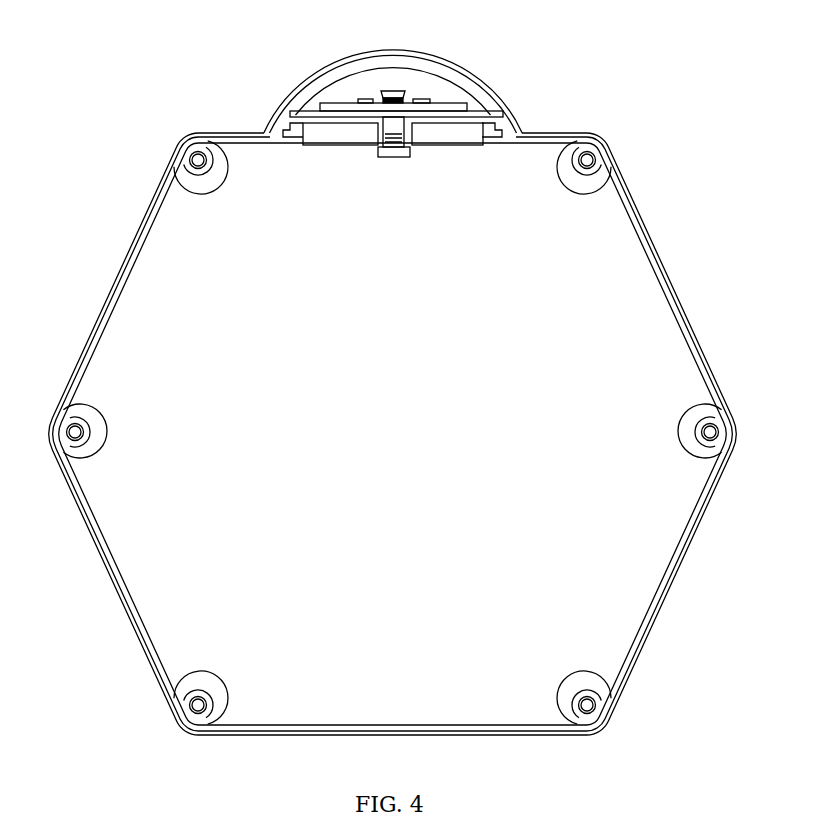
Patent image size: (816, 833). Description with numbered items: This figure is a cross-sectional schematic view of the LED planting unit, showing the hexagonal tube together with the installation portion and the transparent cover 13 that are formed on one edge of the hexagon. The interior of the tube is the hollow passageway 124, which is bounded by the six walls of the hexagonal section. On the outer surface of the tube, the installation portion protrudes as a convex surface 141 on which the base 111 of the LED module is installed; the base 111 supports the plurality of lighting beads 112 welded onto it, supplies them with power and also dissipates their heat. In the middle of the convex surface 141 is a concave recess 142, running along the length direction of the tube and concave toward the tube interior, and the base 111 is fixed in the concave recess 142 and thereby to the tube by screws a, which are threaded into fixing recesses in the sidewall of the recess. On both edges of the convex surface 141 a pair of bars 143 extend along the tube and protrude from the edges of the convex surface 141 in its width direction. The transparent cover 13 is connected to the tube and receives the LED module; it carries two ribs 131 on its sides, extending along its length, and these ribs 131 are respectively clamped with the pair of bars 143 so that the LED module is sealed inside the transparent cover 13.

The transparent cover 13 is at (450, 62).
The screws a is at (395, 91).
The base 111 is at (330, 100).
The lighting beads 112 is at (368, 97).
The hollow passageway 124 is at (190, 545).
The ribs 131 is at (500, 133).
The convex surface 141 is at (350, 117).
The concave recess 142 is at (391, 152).
The bar 143 is at (480, 115).